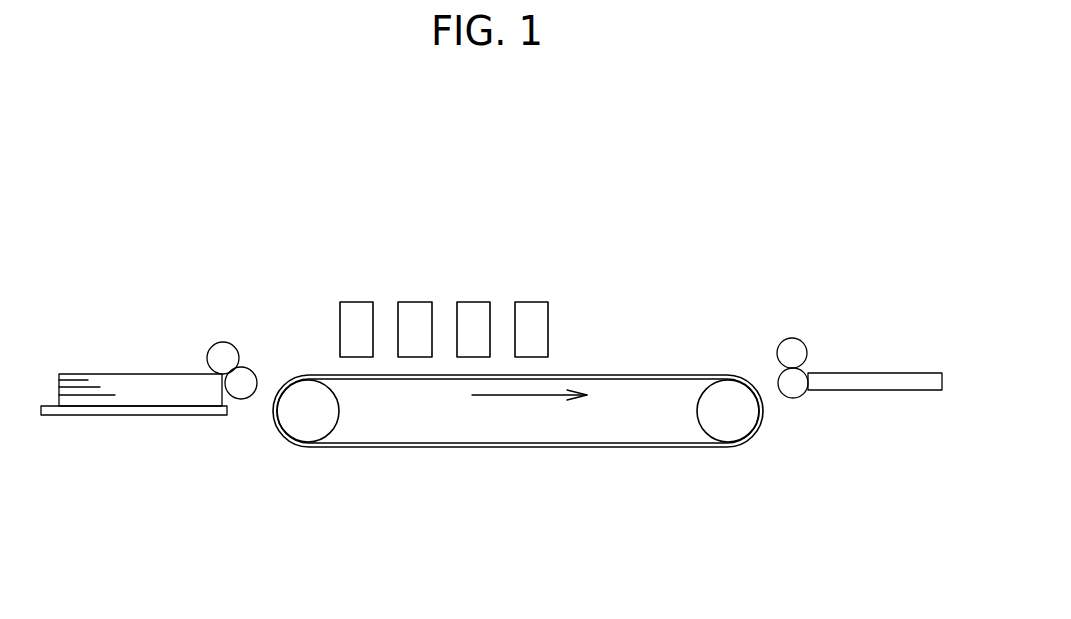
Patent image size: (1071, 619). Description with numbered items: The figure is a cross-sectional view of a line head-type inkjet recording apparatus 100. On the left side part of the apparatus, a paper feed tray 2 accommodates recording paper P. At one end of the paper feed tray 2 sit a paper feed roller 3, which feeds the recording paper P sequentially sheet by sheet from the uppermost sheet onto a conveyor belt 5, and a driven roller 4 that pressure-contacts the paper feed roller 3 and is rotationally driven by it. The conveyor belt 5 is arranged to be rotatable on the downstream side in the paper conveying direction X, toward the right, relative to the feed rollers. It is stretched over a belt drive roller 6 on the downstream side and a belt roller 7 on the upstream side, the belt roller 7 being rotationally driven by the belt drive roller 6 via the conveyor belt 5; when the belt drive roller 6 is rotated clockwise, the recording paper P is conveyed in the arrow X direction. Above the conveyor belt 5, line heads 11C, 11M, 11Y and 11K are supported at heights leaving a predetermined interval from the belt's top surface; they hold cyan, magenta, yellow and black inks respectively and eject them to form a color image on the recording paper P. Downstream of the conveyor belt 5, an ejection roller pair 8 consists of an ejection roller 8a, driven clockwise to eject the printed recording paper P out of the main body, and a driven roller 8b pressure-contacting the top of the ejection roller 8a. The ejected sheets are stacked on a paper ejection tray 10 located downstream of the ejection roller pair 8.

The inkjet recording apparatus 100 is at (278, 308).
The paper feed tray 2 is at (117, 415).
The recording paper P is at (137, 385).
The paper feed roller 3 is at (223, 358).
The driven roller 4 is at (240, 392).
The conveyor belt 5 is at (505, 448).
The paper conveying direction X is at (529, 409).
The belt roller 7 is at (315, 427).
The belt drive roller 6 is at (728, 427).
The line head 11C is at (360, 312).
The line head 11M is at (418, 312).
The line head 11Y is at (476, 312).
The line head 11K is at (533, 312).
The ejection roller pair 8 is at (763, 362).
The ejection roller 8a is at (793, 393).
The driven roller 8b is at (792, 353).
The paper ejection tray 10 is at (885, 382).